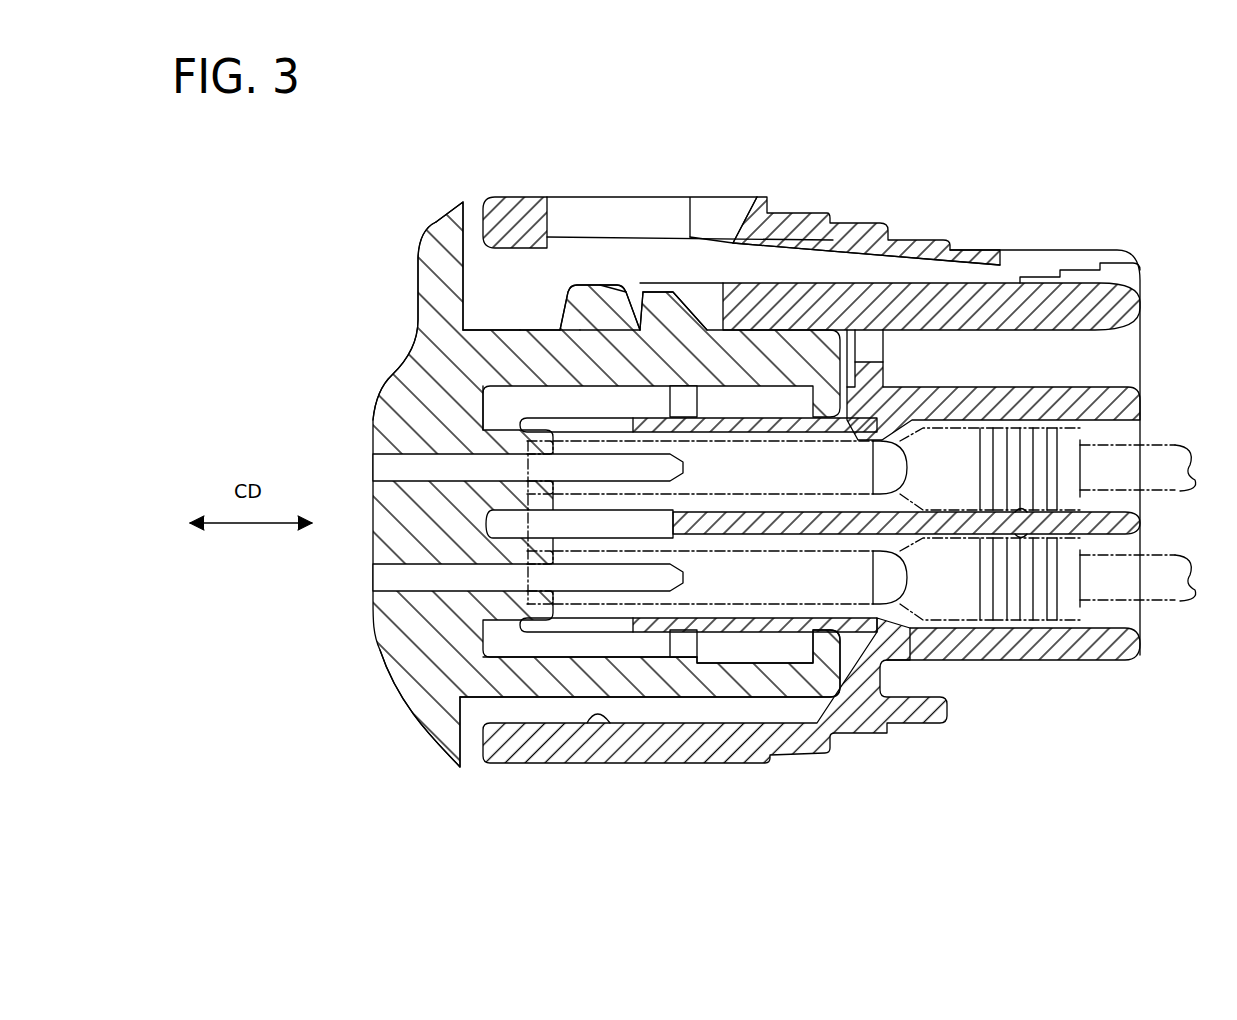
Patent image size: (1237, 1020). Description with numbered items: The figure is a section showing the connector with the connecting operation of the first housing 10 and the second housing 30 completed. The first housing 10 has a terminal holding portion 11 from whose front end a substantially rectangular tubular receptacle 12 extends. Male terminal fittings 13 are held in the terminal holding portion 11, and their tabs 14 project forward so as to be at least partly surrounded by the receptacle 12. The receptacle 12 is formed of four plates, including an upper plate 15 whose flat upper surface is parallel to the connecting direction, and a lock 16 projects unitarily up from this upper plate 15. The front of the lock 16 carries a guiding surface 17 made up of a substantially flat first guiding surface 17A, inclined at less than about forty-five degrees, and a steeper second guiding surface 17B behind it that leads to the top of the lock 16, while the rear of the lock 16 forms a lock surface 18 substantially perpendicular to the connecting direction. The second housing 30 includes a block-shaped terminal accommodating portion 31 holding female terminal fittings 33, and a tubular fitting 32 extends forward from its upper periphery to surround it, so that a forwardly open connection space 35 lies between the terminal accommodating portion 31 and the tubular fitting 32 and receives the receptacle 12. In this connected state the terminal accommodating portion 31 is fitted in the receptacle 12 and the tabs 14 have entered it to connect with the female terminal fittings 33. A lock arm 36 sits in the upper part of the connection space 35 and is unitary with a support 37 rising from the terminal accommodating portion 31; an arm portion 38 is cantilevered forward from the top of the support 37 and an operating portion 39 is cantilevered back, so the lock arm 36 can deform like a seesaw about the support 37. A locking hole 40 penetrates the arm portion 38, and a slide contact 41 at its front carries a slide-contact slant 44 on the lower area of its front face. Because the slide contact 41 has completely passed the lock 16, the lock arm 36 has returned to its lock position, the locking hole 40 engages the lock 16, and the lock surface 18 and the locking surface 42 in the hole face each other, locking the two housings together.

The first housing 10 is at (382, 257).
The terminal holding portion 11 is at (395, 390).
The receptacle 12 is at (650, 688).
The male terminal fittings 13 is at (450, 605).
The tabs 14 is at (415, 580).
The upper plate 15 is at (440, 222).
The lock 16 is at (657, 297).
The guiding surface 17 is at (706, 218).
The first guiding surface 17A is at (717, 333).
The second guiding surface 17B is at (663, 303).
The lock surface 18 is at (610, 317).
The second housing 30 is at (842, 478).
The terminal accommodating portion 31 is at (1067, 650).
The tubular fitting 32 is at (713, 745).
The female terminal fittings 33 is at (770, 590).
The connection space 35 is at (608, 716).
The lock arm 36 is at (850, 277).
The support 37 is at (875, 343).
The arm portion 38 is at (768, 307).
The operating portion 39 is at (1130, 300).
The locking hole 40 is at (750, 243).
The slide contact 41 is at (573, 322).
The locking surface 42 is at (637, 290).
The slide-contact slant 44 is at (522, 347).